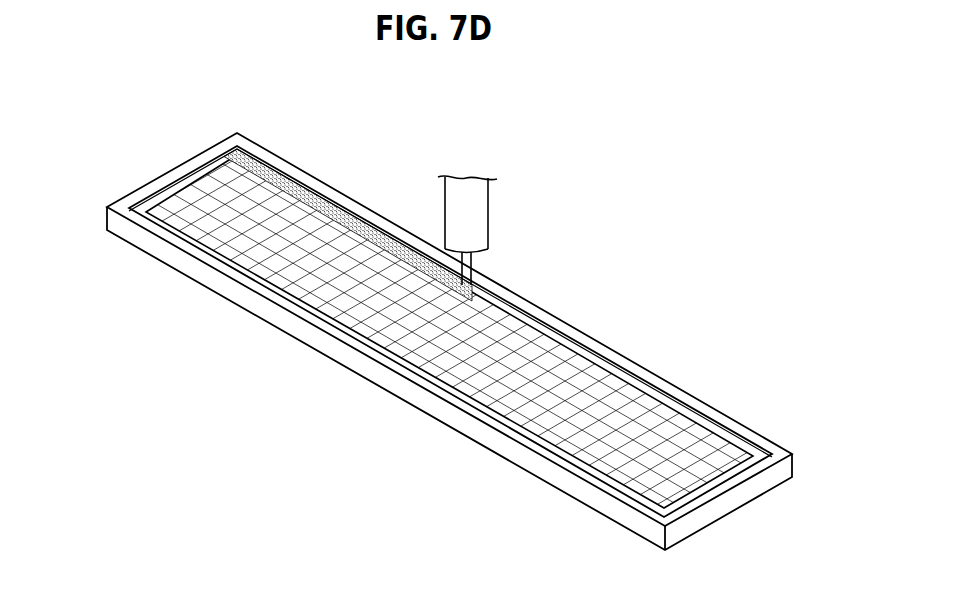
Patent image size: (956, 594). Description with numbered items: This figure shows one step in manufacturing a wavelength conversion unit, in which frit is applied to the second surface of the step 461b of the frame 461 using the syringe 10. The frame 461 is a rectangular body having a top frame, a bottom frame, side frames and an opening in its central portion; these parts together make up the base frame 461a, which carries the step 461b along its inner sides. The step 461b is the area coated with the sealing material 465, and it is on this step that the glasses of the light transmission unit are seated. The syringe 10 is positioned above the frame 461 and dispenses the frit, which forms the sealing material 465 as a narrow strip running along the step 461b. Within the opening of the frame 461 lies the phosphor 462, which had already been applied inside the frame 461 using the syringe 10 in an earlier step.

The syringe 10 is at (473, 213).
The frame 461 is at (283, 330).
The base frame 461a is at (152, 187).
The step 461b is at (195, 177).
The phosphor 462 is at (244, 241).
The sealing material 465 is at (323, 203).